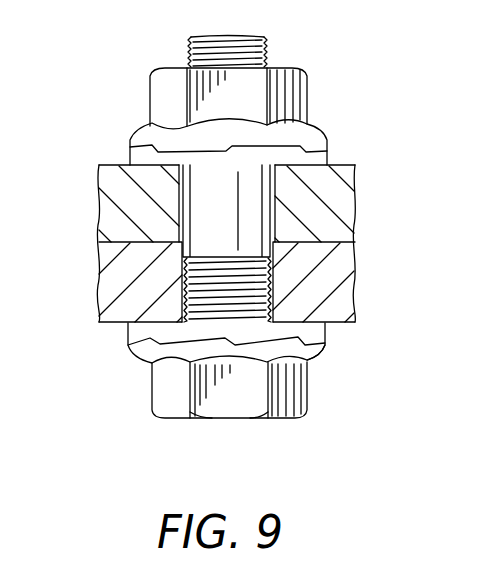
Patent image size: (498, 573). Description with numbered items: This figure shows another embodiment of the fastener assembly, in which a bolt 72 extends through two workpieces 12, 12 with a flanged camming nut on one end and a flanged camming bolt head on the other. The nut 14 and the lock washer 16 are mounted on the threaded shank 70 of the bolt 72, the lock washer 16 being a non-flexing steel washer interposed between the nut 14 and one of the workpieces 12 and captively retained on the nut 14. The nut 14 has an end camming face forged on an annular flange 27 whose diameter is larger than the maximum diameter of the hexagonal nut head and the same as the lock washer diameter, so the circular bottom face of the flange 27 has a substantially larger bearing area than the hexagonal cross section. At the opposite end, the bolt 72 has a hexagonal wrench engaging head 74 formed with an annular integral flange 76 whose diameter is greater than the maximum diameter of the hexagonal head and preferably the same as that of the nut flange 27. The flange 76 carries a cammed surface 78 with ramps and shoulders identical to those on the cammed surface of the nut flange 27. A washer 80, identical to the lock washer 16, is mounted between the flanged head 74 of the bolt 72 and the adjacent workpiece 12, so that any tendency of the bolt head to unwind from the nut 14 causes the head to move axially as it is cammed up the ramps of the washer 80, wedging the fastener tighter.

The threaded shank 70 is at (190, 53).
The nut 14 is at (300, 76).
The annular flange 27 is at (310, 127).
The lock washer 16 is at (327, 153).
The workpiece 12 is at (355, 210).
The washer 80 is at (325, 332).
The cammed surface 78 is at (155, 333).
The annular integral flange 76 is at (323, 349).
The bolt 72 is at (152, 388).
The hexagonal wrench engaging head 74 is at (310, 397).